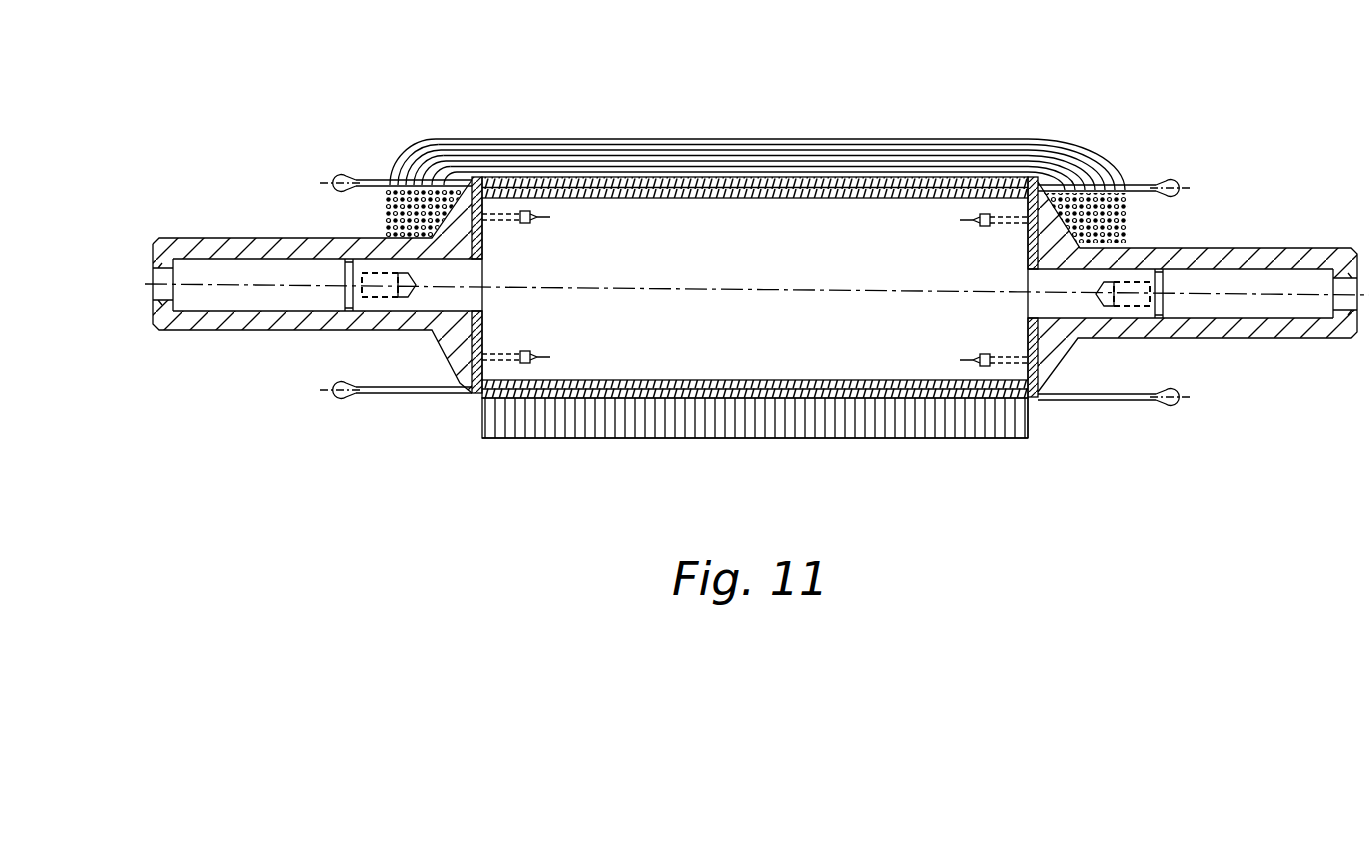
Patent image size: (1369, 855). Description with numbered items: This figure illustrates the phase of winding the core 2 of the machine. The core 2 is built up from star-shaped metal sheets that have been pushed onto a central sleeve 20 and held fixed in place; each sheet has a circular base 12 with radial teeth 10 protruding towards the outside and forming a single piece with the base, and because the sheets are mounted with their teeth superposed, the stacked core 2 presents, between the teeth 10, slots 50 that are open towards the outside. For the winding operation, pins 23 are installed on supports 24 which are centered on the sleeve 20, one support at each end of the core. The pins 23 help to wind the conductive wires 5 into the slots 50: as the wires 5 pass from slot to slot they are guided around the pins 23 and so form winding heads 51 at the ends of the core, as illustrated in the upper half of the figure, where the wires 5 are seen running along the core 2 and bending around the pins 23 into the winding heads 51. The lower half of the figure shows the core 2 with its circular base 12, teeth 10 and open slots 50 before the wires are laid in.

The core 2 is at (883, 450).
The conductive wires 5 is at (567, 137).
The radial teeth 10 is at (625, 425).
The circular base 12 is at (562, 387).
The sleeve 20 is at (797, 220).
The pins 23 is at (338, 181).
The supports 24 is at (192, 247).
The slots 50 is at (1033, 425).
The winding heads 51 is at (426, 136).